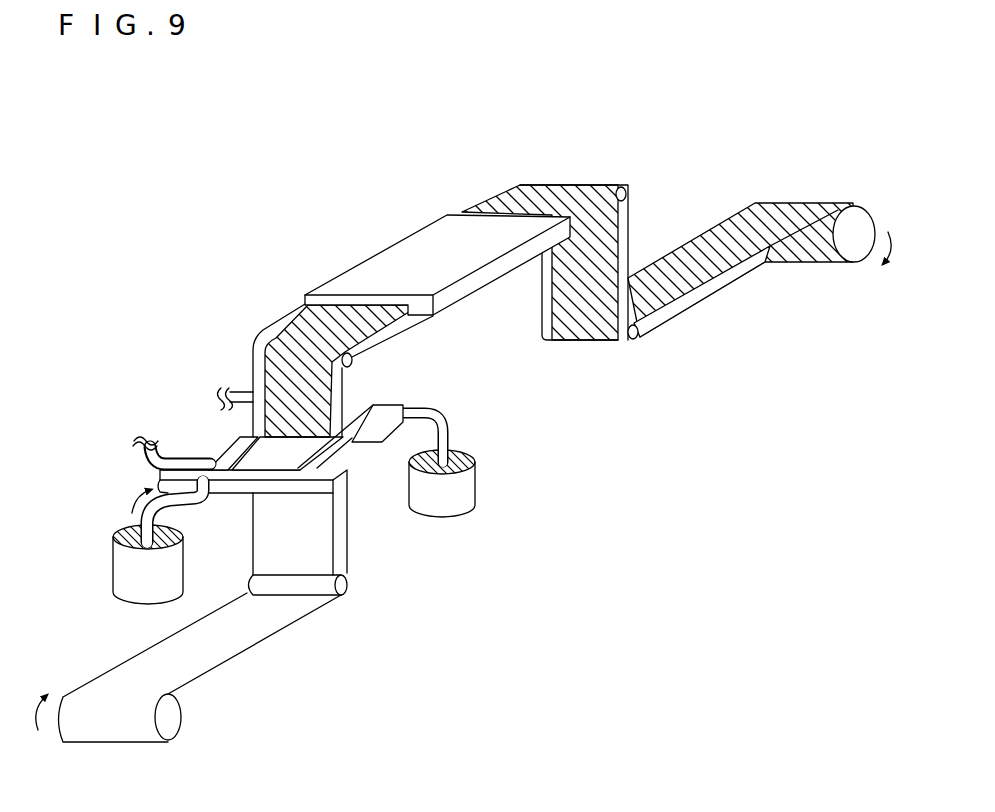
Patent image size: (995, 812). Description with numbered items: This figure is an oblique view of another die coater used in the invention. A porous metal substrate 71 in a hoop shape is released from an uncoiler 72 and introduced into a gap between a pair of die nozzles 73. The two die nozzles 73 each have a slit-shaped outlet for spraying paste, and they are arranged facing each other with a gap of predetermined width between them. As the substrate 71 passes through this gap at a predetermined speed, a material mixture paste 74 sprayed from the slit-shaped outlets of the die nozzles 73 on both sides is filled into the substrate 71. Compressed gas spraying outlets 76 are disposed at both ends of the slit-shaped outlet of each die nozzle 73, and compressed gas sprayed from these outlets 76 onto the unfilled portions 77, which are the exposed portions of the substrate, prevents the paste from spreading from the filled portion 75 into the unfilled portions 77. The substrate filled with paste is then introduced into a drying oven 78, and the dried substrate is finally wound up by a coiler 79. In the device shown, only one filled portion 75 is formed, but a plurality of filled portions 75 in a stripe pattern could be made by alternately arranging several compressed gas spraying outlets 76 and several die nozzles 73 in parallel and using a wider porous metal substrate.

The porous metal substrate 71 is at (230, 647).
The uncoiler 72 is at (172, 724).
The die nozzles 73 is at (354, 468).
The material mixture paste 74 is at (123, 528).
The filled portion 75 is at (292, 352).
The compressed gas spraying outlets 76 is at (240, 448).
The unfilled portions 77 is at (257, 383).
The drying oven 78 is at (423, 258).
The coiler 79 is at (855, 250).